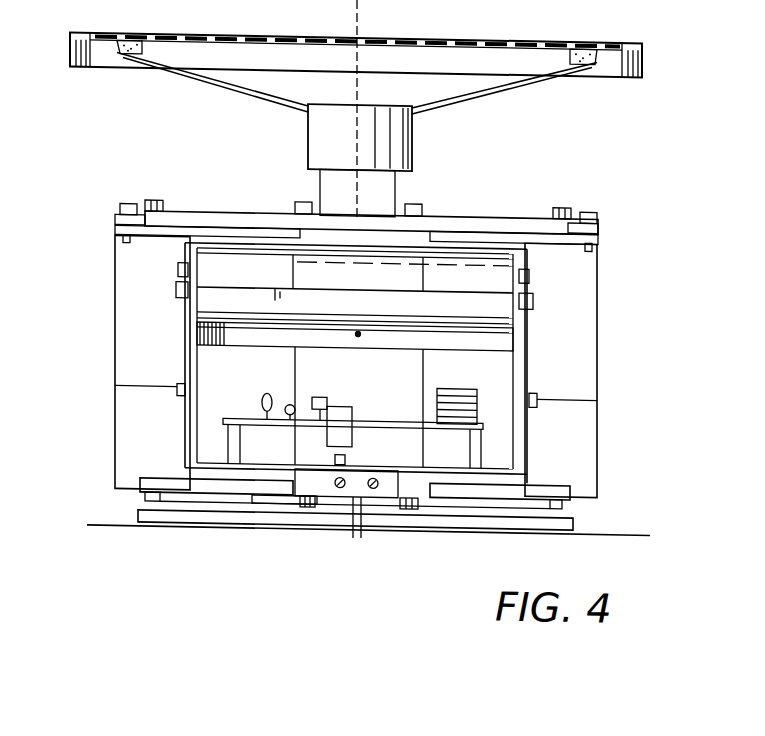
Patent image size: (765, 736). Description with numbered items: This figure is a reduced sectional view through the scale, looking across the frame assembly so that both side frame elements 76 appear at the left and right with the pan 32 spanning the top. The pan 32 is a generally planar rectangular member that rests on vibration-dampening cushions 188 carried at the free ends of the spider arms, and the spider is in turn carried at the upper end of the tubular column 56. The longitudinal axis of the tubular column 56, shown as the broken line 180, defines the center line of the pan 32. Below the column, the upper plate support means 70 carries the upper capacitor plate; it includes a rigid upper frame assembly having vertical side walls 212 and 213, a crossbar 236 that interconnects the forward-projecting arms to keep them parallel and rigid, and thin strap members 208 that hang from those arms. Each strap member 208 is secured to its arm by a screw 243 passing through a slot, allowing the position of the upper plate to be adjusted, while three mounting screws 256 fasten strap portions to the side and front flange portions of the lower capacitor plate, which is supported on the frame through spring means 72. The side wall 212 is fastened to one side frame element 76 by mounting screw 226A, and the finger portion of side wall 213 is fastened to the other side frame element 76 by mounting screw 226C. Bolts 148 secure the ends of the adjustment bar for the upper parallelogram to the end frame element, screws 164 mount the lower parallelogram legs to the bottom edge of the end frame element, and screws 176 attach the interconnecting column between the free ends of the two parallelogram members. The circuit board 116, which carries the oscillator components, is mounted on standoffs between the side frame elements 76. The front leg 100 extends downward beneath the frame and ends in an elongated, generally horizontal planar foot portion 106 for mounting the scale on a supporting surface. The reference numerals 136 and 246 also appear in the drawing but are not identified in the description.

The pan 32 is at (332, 12).
The tubular column 56 is at (414, 136).
The upper plate support means 70 is at (208, 242).
The spring means 72 is at (505, 300).
The side frame elements 76 is at (190, 432).
The front leg 100 is at (357, 508).
The foot portion 106 is at (375, 520).
The circuit board 116 is at (404, 396).
The bolt 136 is at (150, 204).
The bolts 148 is at (120, 217).
The screws 164 is at (150, 503).
The screws 176 is at (300, 204).
The broken line 180 is at (360, 20).
The vibration-dampening cushion 188 is at (120, 46).
The strap members 208 is at (185, 293).
The side wall 212 is at (197, 342).
The side wall 213 is at (527, 376).
The mounting screw 226A is at (180, 394).
The mounting screw 226C is at (537, 398).
The crossbar 236 is at (481, 245).
The screw 243 is at (185, 280).
The roller shaft 246 is at (505, 346).
The mounting screws 256 is at (358, 337).